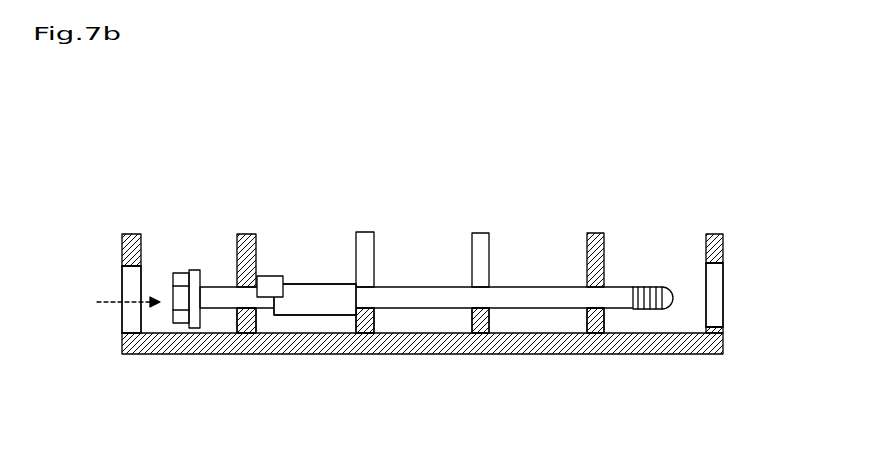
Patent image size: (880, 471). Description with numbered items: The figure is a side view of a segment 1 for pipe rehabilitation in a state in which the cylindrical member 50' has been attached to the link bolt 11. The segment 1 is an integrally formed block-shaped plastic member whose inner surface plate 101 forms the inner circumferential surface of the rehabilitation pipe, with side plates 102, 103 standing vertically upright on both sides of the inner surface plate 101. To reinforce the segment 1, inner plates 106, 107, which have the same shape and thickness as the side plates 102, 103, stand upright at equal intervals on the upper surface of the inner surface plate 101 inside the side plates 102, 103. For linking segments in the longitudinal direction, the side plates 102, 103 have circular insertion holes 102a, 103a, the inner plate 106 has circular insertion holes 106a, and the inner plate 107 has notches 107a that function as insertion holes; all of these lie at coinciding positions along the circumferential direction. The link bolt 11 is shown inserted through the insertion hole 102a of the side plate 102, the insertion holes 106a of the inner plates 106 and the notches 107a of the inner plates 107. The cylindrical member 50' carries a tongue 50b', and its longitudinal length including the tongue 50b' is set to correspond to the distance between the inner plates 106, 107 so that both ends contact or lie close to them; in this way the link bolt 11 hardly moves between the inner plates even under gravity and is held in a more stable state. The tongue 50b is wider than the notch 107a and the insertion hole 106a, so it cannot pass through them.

The segment 1 is at (428, 166).
The link bolt 11 is at (408, 286).
The cylindrical member 50' is at (315, 247).
The tongue 50b is at (299, 346).
The tongue 50b' is at (278, 254).
The inner surface plate 101 is at (376, 355).
The side plate 102 is at (132, 233).
The insertion hole 102a is at (133, 284).
The side plate 103 is at (717, 233).
The insertion hole 103a is at (723, 300).
The inner plate 106 is at (242, 233).
The insertion hole 106a is at (238, 312).
The inner plate 107 is at (362, 232).
The notch 107a is at (352, 312).